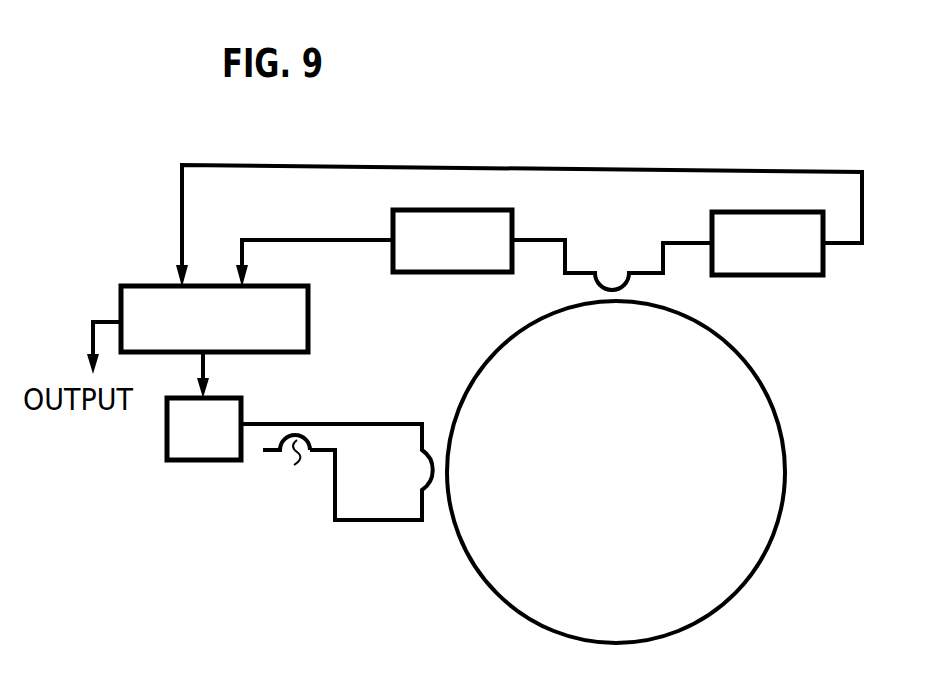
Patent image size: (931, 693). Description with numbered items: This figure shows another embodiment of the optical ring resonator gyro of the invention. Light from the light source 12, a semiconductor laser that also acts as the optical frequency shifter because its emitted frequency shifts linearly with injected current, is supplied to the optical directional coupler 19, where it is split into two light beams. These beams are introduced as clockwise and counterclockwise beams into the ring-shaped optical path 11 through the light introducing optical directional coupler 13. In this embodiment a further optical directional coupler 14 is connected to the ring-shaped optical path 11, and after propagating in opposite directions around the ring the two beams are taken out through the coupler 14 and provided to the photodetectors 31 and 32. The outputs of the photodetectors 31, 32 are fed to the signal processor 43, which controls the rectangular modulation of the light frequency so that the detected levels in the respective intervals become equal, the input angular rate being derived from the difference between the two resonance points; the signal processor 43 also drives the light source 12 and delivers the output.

The ring-shaped optical path 11 is at (727, 605).
The light source 12 is at (243, 404).
The optical directional coupler 13 is at (443, 466).
The optical directional coupler 14 is at (612, 293).
The optical directional coupler 19 is at (290, 469).
The photodetector 31 is at (480, 274).
The photodetector 32 is at (802, 277).
The signal processor 43 is at (310, 303).